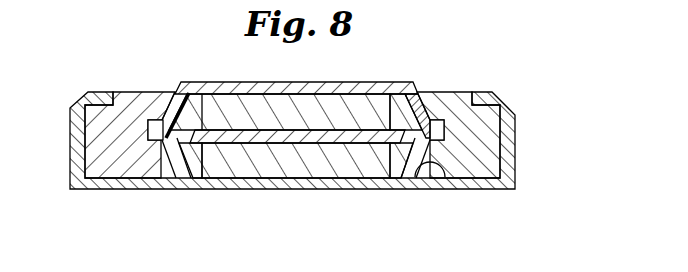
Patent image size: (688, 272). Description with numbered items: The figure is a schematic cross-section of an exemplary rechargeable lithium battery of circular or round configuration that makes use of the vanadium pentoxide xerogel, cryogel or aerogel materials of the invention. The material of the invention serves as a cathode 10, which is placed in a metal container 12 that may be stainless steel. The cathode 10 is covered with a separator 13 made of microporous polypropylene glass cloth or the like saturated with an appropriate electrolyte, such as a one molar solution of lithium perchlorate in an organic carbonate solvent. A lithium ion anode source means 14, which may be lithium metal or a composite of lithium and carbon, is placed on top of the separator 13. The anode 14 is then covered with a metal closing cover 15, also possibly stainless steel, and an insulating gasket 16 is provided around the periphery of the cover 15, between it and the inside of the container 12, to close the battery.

The cathode 10 is at (292, 170).
The metal container 12 is at (517, 143).
The separator 13 is at (437, 172).
The lithium ion anode source means 14 is at (229, 108).
The metal closing cover 15 is at (339, 82).
The insulating gasket 16 is at (124, 91).